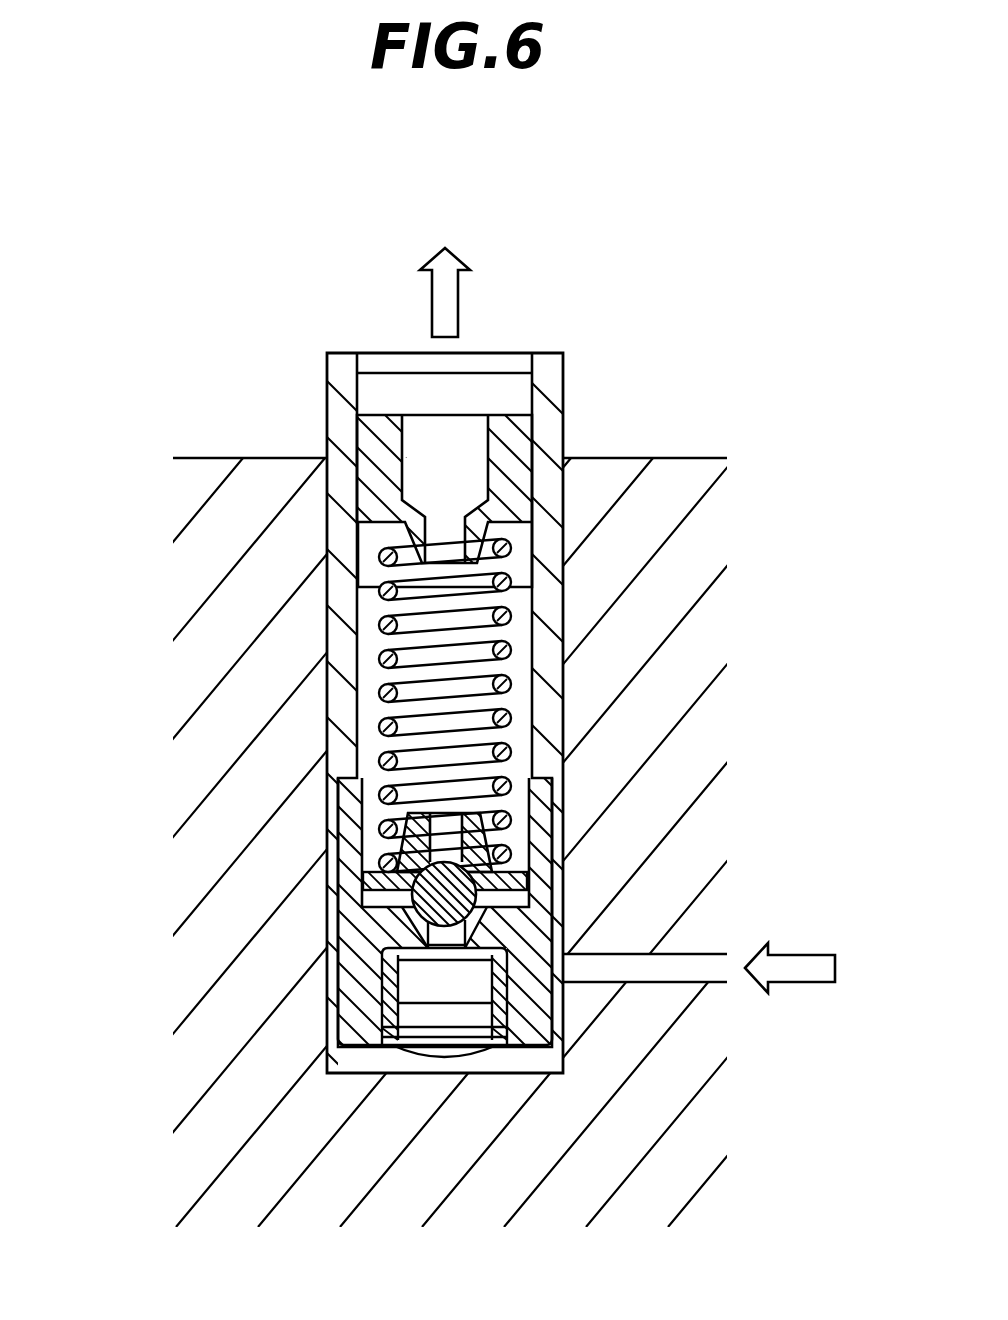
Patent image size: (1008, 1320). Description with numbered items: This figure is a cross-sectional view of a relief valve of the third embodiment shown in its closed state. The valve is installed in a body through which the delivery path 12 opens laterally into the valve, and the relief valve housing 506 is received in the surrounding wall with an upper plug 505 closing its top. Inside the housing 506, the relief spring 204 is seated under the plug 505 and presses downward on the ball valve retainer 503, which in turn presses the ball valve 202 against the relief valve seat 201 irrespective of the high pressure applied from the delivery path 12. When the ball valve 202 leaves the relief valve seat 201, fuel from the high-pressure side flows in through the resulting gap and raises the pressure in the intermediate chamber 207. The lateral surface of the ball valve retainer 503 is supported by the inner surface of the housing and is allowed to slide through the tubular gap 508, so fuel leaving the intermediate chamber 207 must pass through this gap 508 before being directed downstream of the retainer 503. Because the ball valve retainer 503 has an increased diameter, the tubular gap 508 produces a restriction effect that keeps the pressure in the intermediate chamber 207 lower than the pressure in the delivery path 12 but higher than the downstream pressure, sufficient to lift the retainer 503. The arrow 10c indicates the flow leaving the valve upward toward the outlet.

The outlet flow direction 10c is at (445, 269).
The delivery path 12 is at (721, 968).
The relief valve seat 201 is at (465, 922).
The ball valve 202 is at (528, 900).
The relief spring 204 is at (505, 721).
The intermediate chamber 207 is at (387, 900).
The ball valve retainer 503 is at (408, 850).
The plug 505 is at (520, 440).
The valve housing 506 is at (547, 598).
The tubular gap 508 is at (387, 880).